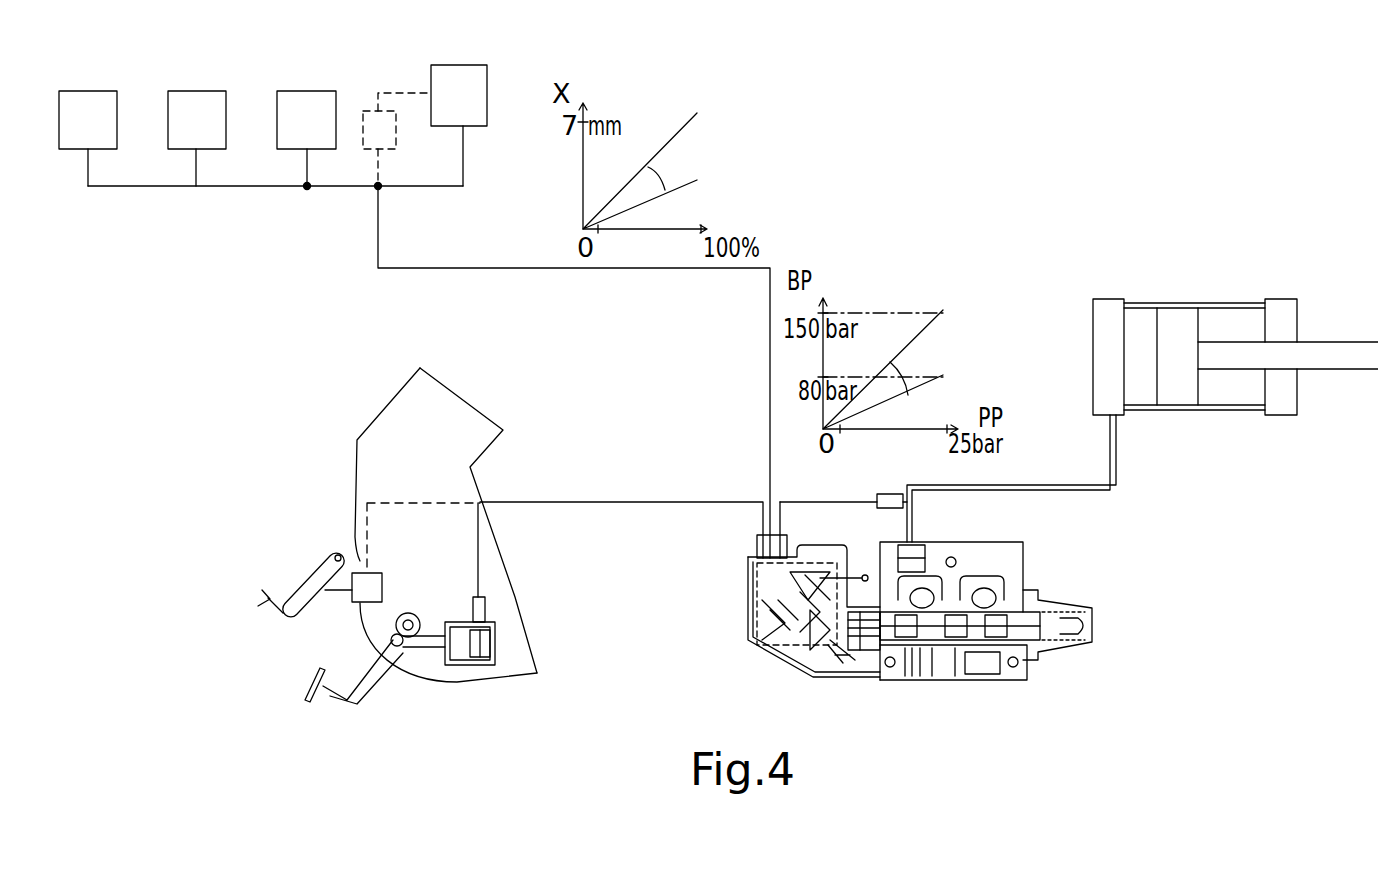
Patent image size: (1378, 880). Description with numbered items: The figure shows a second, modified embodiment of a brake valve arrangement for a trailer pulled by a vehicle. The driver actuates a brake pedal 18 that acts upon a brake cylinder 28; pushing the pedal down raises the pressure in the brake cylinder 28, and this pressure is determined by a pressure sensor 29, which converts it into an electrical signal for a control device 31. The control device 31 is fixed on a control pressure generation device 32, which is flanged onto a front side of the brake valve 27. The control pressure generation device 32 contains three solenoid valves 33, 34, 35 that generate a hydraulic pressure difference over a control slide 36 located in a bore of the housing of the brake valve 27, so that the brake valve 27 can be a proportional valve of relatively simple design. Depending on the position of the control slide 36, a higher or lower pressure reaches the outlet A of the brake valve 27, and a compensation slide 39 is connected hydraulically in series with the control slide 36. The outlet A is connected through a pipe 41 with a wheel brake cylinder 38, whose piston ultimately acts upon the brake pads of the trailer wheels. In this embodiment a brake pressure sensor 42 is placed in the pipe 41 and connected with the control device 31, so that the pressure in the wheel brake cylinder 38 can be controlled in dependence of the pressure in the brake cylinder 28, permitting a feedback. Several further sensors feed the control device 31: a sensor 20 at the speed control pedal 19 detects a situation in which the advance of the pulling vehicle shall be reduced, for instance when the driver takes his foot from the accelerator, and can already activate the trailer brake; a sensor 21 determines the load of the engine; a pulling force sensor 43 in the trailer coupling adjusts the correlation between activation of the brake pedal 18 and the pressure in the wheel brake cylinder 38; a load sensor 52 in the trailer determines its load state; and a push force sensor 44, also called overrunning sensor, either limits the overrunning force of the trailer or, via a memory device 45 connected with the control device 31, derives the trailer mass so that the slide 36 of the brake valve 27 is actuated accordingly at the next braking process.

The brake pedal 18 is at (318, 693).
The speed control pedal 19 is at (262, 595).
The sensor 20 is at (363, 603).
The sensor 21 is at (186, 102).
The brake valve 27 is at (1012, 556).
The brake cylinder 28 is at (480, 665).
The pressure sensor 29 is at (487, 605).
The control device 31 is at (792, 560).
The control pressure generation device 32 is at (748, 595).
The solenoid valve 33 is at (773, 647).
The solenoid valve 34 is at (818, 655).
The solenoid valve 35 is at (845, 650).
The control slide 36 is at (1003, 612).
The wheel brake cylinder 38 is at (1193, 407).
The compensation slide 39 is at (950, 665).
The pipe 41 is at (1058, 485).
The brake pressure sensor 42 is at (882, 510).
The pulling force sensor 43 is at (308, 98).
The push force sensor 44 is at (458, 77).
The memory device 45 is at (387, 135).
The load sensor 52 is at (90, 98).
The outlet A is at (915, 550).